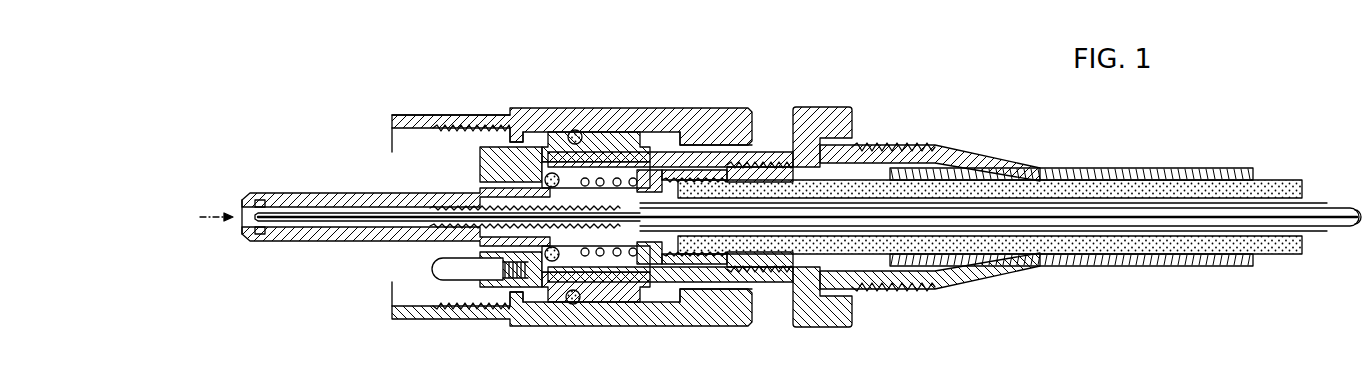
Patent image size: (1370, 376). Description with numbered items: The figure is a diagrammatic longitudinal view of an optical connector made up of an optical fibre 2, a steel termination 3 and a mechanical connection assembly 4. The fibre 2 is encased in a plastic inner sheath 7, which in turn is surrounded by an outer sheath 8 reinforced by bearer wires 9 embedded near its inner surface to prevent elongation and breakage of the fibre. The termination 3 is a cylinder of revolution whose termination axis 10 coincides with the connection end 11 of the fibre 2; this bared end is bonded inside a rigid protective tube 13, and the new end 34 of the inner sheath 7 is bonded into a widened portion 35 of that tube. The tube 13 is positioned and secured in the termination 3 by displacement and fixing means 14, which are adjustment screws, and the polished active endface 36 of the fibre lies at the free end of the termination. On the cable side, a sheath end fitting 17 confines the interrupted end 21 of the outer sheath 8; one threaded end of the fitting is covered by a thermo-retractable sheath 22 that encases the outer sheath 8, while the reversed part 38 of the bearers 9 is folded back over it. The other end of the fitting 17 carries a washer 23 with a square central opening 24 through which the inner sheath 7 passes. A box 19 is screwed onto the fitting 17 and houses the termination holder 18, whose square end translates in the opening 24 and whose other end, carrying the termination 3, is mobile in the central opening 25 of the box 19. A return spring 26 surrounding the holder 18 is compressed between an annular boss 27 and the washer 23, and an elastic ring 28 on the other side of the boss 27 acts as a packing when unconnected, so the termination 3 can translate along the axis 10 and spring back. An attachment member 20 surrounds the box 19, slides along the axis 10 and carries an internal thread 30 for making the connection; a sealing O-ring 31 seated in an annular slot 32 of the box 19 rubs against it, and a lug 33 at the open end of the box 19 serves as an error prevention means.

The optical fibre 2 is at (1362, 224).
The termination 3 is at (275, 193).
The mechanical connection assembly 4 is at (910, 82).
The inner sheath 7 is at (1341, 208).
The outer sheath 8 is at (1255, 192).
The bearers 9 is at (1316, 234).
The termination axis 10 is at (215, 197).
The connection end of optical fibre 11 is at (318, 193).
The rigid protective tube 13 is at (343, 242).
The displacement and fixing means 14 is at (266, 232).
The sheath end fitting 17 is at (828, 108).
The termination holder 18 is at (627, 108).
The box 19 is at (683, 108).
The attachment member 20 is at (760, 108).
The end of outer sheath 21 is at (765, 257).
The thermo-retractable sheath 22 is at (1020, 168).
The washer 23 is at (642, 287).
The square central opening 24 is at (703, 255).
The central opening 25 is at (477, 192).
The return spring 26 is at (608, 262).
The annular boss 27 is at (535, 108).
The elastic ring 28 is at (492, 112).
The internal thread 30 is at (423, 127).
The sealing O-ring 31 is at (573, 108).
The annular slot 32 is at (563, 305).
The lug 33 is at (447, 270).
The new end of inner sheath 34 is at (422, 242).
The widened portion 35 is at (428, 193).
The active endface 36 is at (231, 222).
The reversed part of bearers 38 is at (850, 255).